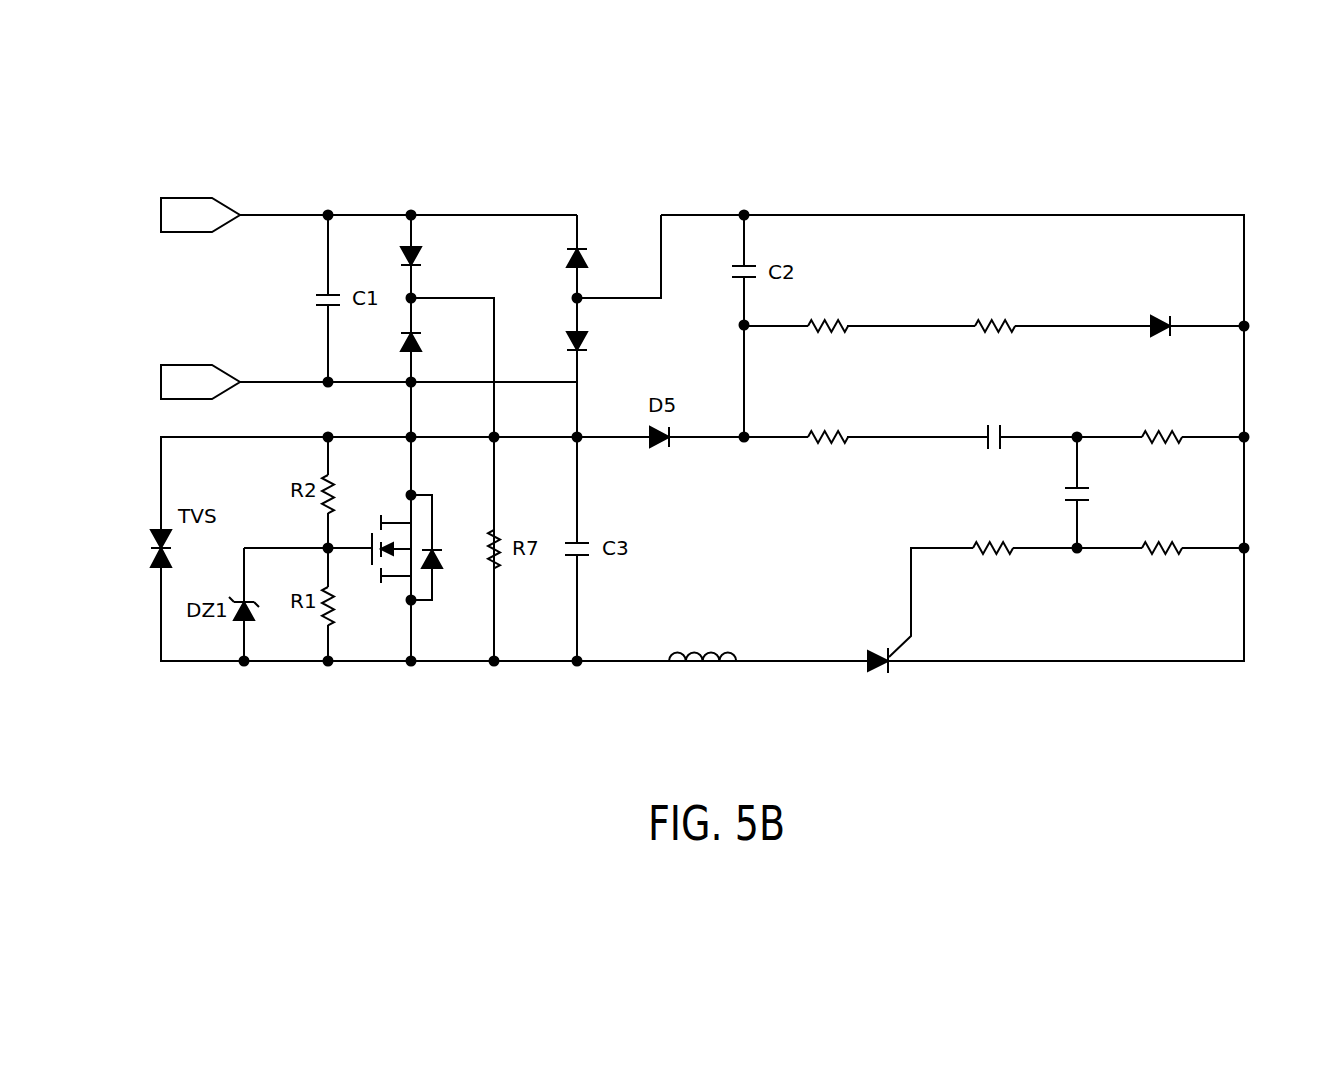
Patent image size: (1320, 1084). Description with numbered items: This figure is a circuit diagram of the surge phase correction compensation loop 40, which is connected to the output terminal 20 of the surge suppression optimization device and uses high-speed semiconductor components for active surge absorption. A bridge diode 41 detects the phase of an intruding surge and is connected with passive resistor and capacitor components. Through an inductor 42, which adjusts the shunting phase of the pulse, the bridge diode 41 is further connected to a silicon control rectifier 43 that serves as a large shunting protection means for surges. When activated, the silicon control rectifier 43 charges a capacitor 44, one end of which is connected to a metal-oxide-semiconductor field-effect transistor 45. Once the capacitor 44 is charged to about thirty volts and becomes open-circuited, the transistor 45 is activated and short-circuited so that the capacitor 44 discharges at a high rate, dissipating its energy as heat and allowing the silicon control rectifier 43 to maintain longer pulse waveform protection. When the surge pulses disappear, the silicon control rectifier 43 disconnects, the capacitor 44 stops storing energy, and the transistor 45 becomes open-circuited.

The output terminal 20 is at (158, 297).
The surge phase correction compensation loop 40 is at (1229, 717).
The bridge diode 41 is at (555, 332).
The inductor 42 is at (709, 668).
The silicon control rectifier 43 is at (890, 676).
The capacitor 44 is at (1020, 401).
The MOSFET 45 is at (372, 582).